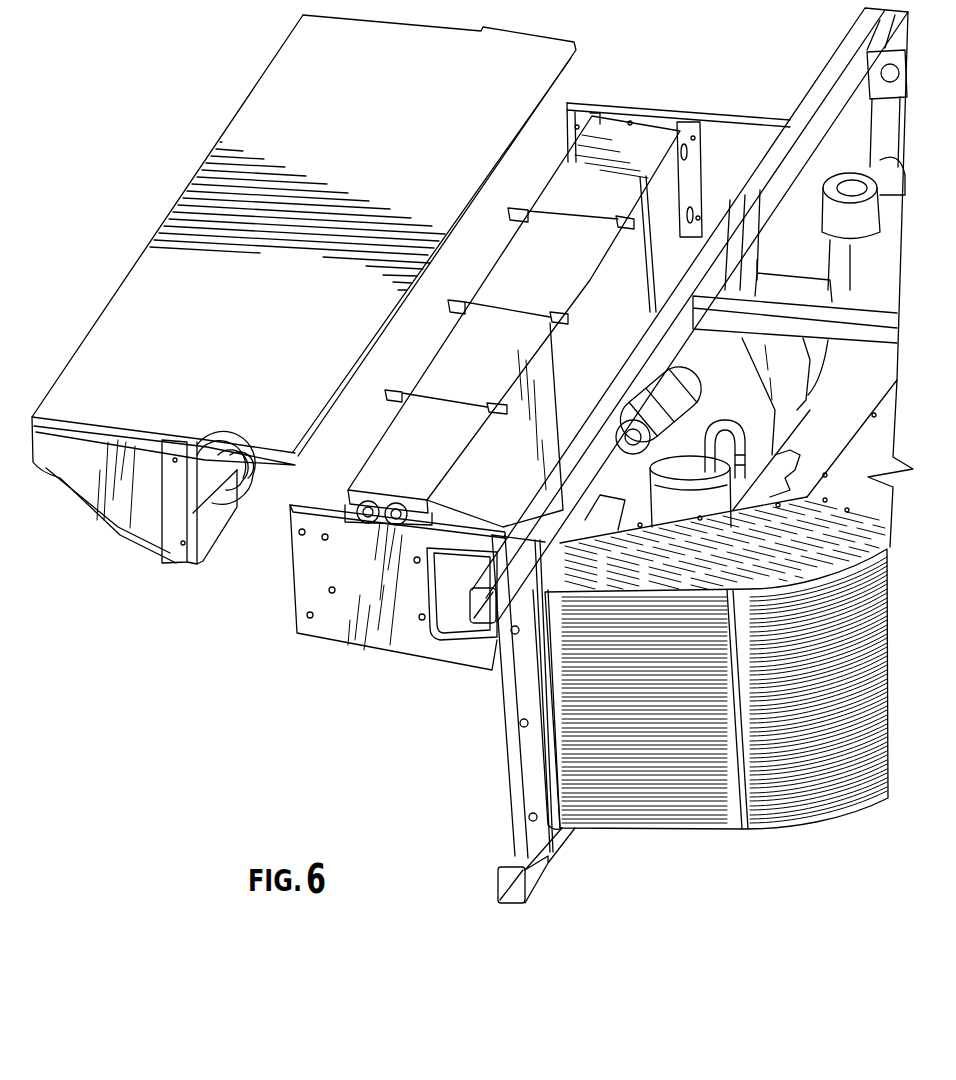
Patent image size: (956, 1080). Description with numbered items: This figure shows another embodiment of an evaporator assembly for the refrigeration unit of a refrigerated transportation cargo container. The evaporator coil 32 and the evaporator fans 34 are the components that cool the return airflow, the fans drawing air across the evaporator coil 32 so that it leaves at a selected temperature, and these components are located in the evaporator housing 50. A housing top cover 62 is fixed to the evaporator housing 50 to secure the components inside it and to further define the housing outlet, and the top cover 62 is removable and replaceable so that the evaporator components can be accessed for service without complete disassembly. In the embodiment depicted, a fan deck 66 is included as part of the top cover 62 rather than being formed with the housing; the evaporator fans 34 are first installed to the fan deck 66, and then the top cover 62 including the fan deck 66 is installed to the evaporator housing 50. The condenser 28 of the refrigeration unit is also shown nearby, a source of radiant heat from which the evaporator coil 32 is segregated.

The housing top cover 62 is at (195, 258).
The evaporator fan 34 is at (212, 478).
The fan deck 66 is at (181, 545).
The evaporator coil 32 is at (486, 388).
The evaporator housing 50 is at (345, 615).
The condenser 28 is at (820, 745).